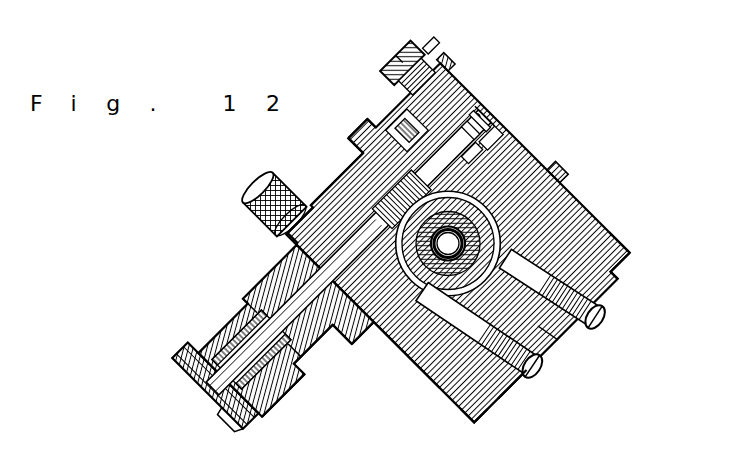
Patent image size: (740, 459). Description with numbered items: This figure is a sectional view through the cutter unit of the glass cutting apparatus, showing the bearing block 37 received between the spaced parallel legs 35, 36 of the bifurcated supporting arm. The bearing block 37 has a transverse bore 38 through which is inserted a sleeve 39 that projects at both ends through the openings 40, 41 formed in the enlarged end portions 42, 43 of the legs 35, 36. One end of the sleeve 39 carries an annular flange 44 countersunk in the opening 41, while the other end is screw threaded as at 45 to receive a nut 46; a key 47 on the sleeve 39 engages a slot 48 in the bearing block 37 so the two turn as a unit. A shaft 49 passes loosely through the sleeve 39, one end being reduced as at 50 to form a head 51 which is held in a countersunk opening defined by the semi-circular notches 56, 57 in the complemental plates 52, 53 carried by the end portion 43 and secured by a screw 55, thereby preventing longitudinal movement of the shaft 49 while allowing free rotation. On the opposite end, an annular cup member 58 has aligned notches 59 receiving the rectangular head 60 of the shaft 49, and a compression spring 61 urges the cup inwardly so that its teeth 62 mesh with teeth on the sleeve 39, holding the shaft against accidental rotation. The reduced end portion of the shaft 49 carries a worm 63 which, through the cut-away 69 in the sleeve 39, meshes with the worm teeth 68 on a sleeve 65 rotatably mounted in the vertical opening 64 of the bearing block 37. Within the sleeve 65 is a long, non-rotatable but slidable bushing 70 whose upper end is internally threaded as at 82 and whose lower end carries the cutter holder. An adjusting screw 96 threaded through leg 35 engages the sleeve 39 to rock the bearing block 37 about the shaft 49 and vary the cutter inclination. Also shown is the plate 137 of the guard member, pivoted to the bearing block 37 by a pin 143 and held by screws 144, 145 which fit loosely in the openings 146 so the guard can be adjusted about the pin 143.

The leg 35 is at (470, 408).
The leg 36 is at (627, 253).
The bearing block 37 is at (550, 178).
The transverse bore 38 is at (346, 161).
The sleeve 39 is at (372, 126).
The opening 40 is at (369, 310).
The opening 41 is at (505, 143).
The enlarged end portion 42 is at (276, 236).
The enlarged end portion 43 is at (386, 60).
The annular flange 44 is at (449, 64).
The screw threads 45 is at (302, 335).
The nut 46 is at (339, 331).
The key 47 is at (396, 110).
The slot 48 is at (386, 112).
The shaft 49 is at (319, 196).
The reduced portion 50 is at (472, 106).
The head 51 is at (480, 118).
The plate 52 is at (552, 160).
The plate 53 is at (410, 36).
The screw 55 is at (440, 50).
The semi-circular notch 56 is at (493, 128).
The semi-circular notch 57 is at (461, 100).
The annular cup member 58 is at (269, 392).
The notches 59 is at (254, 405).
The rectangular head 60 is at (205, 378).
The compression spring 61 is at (216, 320).
The teeth 62 is at (246, 300).
The worm 63 is at (361, 141).
The vertical opening 64 is at (397, 326).
The sleeve 65 is at (377, 320).
The worm teeth 68 is at (498, 150).
The cut-away portion 69 is at (352, 254).
The bushing 70 is at (411, 340).
The internal threads 82 is at (448, 236).
The adjusting screw 96 is at (262, 172).
The plate 137 is at (495, 373).
The pin 143 is at (547, 328).
The screw 144 is at (527, 356).
The screw 145 is at (592, 304).
The openings 146 is at (603, 240).